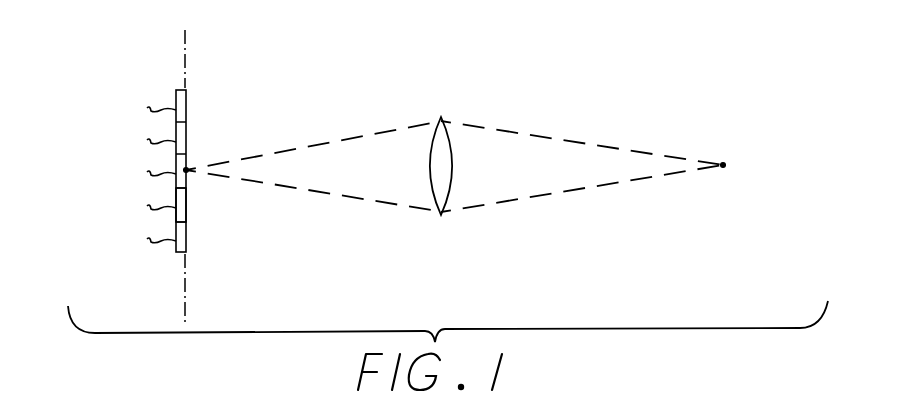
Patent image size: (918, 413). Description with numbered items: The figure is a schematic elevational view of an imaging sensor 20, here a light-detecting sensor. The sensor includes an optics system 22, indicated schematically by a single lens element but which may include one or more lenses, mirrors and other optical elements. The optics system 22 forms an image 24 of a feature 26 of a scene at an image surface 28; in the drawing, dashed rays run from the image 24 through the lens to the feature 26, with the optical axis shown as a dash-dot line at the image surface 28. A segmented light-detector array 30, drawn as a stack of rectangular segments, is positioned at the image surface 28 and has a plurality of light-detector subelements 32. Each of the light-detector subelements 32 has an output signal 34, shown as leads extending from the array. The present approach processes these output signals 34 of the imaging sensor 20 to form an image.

The imaging sensor 20 is at (146, 62).
The optics system 22 is at (427, 116).
The image 24 is at (190, 166).
The feature 26 is at (725, 167).
The image surface 28 is at (188, 71).
The segmented light-detector array 30 is at (170, 96).
The light-detector subelements 32 is at (186, 204).
The output signal 34 is at (161, 244).